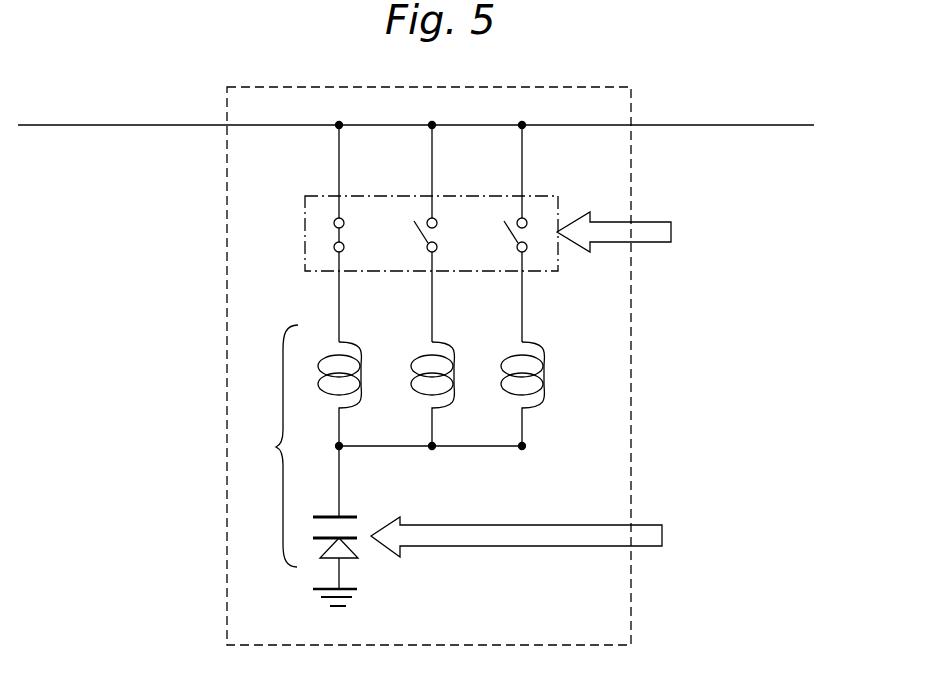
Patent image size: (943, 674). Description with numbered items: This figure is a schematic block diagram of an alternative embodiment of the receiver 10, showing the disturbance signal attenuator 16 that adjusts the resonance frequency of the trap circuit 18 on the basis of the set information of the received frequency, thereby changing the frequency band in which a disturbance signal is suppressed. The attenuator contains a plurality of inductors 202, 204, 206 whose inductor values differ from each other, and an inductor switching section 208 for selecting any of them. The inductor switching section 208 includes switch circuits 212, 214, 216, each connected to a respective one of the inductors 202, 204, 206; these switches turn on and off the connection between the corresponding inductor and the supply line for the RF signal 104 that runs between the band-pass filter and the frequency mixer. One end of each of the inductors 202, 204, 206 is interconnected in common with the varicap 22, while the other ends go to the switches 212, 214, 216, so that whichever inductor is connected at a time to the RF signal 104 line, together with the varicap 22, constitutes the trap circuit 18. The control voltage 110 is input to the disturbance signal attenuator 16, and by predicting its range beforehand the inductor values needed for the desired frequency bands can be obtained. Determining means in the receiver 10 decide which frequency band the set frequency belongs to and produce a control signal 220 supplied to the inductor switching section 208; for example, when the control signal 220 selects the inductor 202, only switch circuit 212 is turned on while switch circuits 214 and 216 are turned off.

The receiver 10 is at (106, 629).
The disturbance signal attenuator 16 is at (631, 617).
The trap circuit 18 is at (276, 447).
The varicap 22 is at (316, 546).
The RF signal 104 is at (121, 126).
The control voltage 110 is at (662, 537).
The inductor 202 is at (320, 351).
The inductor 204 is at (453, 414).
The inductor 206 is at (544, 413).
The inductor switching section 208 is at (304, 245).
The switch circuit 212 is at (317, 230).
The switch circuit 214 is at (452, 231).
The switch circuit 216 is at (539, 242).
The control signal 220 is at (672, 232).